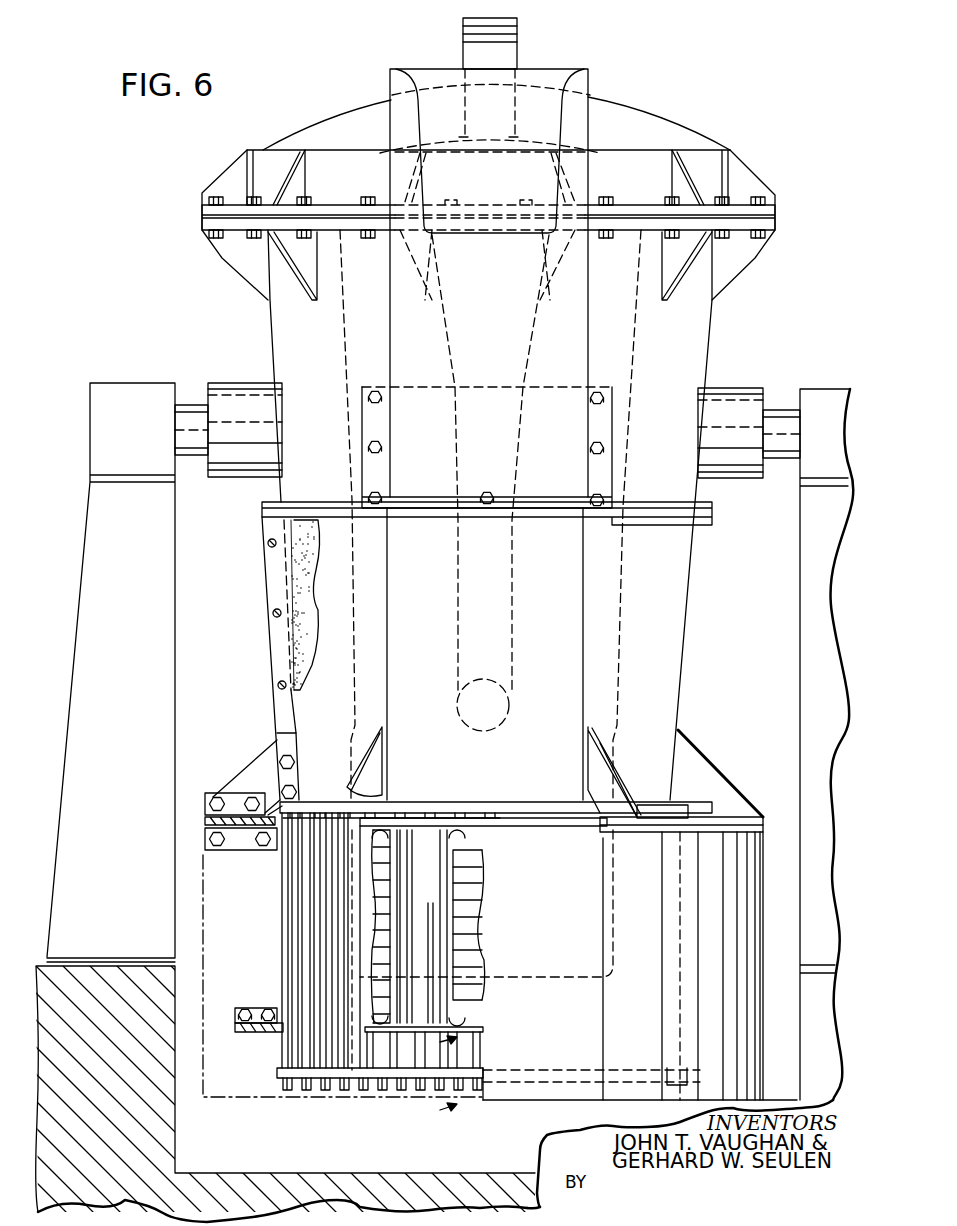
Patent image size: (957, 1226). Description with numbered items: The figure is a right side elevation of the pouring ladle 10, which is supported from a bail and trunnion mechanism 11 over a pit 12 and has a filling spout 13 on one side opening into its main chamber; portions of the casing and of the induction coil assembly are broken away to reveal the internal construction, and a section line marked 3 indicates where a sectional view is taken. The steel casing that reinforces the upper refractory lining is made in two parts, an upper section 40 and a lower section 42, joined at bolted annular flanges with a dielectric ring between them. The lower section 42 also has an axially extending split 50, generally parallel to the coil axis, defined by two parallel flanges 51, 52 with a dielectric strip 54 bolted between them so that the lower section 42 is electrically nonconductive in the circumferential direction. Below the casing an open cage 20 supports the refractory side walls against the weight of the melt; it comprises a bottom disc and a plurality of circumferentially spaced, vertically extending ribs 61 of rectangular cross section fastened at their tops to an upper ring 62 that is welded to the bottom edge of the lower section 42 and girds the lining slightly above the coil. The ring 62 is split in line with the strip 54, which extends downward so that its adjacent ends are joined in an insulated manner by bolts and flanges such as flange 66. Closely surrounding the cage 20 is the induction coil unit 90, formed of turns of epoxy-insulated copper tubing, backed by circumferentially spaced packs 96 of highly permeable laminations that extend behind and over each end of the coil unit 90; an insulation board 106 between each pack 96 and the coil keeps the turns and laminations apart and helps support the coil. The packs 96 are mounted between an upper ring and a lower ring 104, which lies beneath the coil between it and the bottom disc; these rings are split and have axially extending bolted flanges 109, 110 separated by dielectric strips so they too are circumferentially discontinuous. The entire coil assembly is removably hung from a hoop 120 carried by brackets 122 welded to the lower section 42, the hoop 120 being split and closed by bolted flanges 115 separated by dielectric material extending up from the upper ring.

The pouring ladle 10 is at (738, 330).
The bail and trunnion mechanism 11 is at (88, 522).
The pit 12 is at (172, 1114).
The filling spout 13 is at (568, 636).
The cage 20 is at (330, 1095).
The upper section 40 is at (305, 351).
The lower section 42 is at (318, 664).
The split 50 is at (262, 563).
The flange 51 is at (280, 720).
The flange 52 is at (275, 588).
The strip 54 is at (283, 637).
The ribs 61 is at (353, 1058).
The upper ring 62 is at (322, 804).
The flange 66 is at (297, 790).
The induction coil unit 90 is at (477, 890).
The packs 96 is at (425, 952).
The lower ring 104 is at (262, 1032).
The insulation board 106 is at (494, 812).
The flanges 109 is at (205, 852).
The flanges 110 is at (257, 1008).
The flanges 115 is at (212, 793).
The hoop 120 is at (715, 815).
The brackets 122 is at (708, 758).
The section line 3- 3 is at (439, 1082).